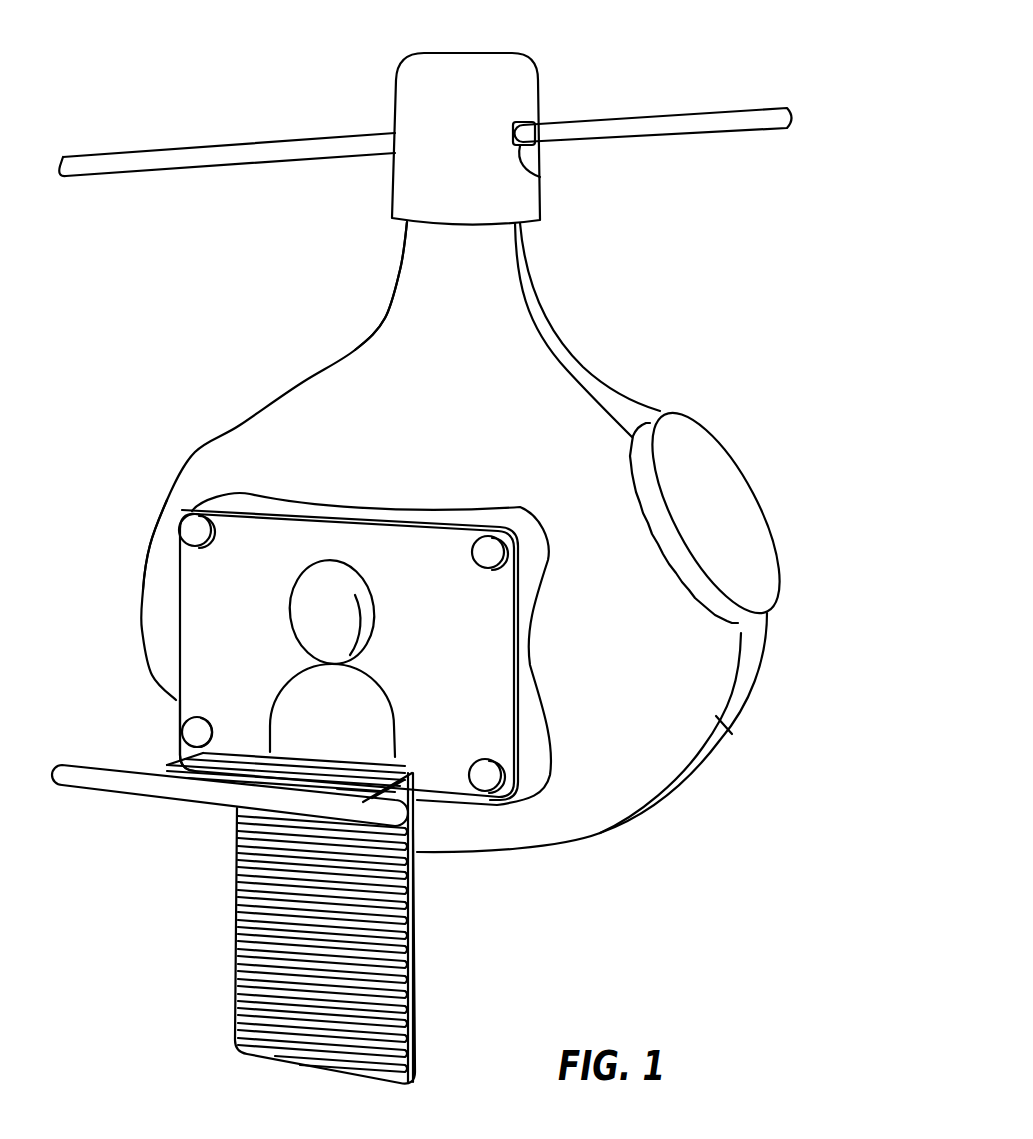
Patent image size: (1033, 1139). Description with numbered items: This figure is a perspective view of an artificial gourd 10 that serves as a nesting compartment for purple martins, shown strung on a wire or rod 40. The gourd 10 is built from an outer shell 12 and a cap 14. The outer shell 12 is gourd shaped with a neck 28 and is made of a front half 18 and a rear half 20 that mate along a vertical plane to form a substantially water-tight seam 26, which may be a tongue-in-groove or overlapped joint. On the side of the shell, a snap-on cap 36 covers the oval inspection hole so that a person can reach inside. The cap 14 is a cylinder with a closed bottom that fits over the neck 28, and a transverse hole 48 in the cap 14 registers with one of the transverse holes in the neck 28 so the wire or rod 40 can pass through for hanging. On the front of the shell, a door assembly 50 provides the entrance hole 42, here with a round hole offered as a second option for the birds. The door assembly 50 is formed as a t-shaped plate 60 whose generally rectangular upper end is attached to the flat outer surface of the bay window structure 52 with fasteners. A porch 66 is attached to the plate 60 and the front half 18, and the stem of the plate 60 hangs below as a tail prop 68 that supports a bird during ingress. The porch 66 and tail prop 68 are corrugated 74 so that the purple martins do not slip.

The artificial gourd 10 is at (680, 328).
The outer shell 12 is at (765, 650).
The cap 14 is at (537, 68).
The front half 18 is at (163, 512).
The rear half 20 is at (557, 335).
The seam 26 is at (728, 725).
The neck 28 is at (403, 238).
The snap-on cap 36 is at (738, 473).
The wire or rod 40 is at (645, 112).
The entrance hole 42 is at (360, 683).
The transverse hole 48 is at (540, 177).
The door assembly 50 is at (175, 632).
The bay window structure 52 is at (525, 653).
The t-shaped plate 60 is at (178, 707).
The porch 66 is at (413, 797).
The tail prop 68 is at (420, 1015).
The corrugations 74 is at (242, 756).